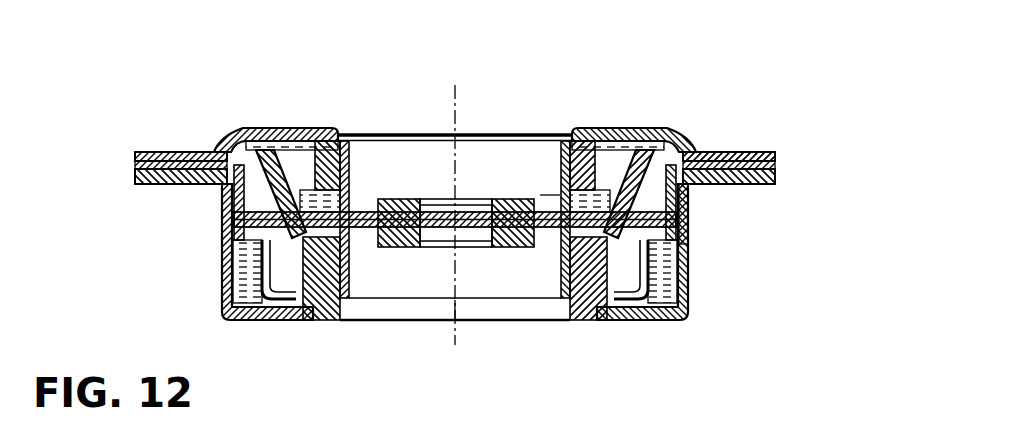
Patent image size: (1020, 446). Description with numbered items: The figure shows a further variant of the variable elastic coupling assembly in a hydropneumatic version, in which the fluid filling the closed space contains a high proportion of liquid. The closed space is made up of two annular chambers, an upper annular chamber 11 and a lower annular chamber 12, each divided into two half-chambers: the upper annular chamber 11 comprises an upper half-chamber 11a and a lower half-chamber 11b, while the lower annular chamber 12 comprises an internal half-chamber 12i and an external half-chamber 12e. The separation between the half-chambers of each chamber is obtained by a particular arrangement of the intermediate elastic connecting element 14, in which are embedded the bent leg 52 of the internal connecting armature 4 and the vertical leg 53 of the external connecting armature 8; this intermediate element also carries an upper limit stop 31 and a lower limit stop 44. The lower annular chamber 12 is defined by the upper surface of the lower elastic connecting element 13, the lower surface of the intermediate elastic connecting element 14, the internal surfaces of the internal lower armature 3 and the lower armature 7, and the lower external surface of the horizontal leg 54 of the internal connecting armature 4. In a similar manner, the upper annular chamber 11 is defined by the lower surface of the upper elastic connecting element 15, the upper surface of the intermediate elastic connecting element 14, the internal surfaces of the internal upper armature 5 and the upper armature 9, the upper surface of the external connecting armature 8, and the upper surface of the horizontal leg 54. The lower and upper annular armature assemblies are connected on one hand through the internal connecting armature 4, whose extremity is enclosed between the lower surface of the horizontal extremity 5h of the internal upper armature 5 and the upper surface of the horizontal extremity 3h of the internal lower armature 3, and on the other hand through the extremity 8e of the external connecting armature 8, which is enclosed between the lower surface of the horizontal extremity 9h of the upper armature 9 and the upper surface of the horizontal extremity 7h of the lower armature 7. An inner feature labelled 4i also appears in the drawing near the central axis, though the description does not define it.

The upper annular chamber 11 is at (335, 57).
The upper half-chamber 11a is at (248, 128).
The lower half-chamber 11b is at (290, 128).
The upper elastic connecting element 15 is at (322, 132).
The internal upper armature 5 is at (546, 165).
The horizontal extremity of the internal upper armature 5h is at (540, 195).
The intermediate elastic connecting element 14 is at (642, 130).
The upper limit stop 31 is at (660, 133).
The upper armature 9 is at (694, 142).
The horizontal extremity of the upper armature 9h is at (745, 152).
The extremity of the external connecting armature 8e is at (775, 166).
The external connecting armature 8 is at (692, 184).
The horizontal extremity of the lower armature 7h is at (752, 177).
The vertical leg of the external connecting armature 53 is at (690, 225).
The bent leg of the internal connecting armature 52 is at (655, 250).
The lower limit stop 44 is at (662, 288).
The lower armature 7 is at (634, 322).
The internal lower armature 3 is at (552, 290).
The horizontal leg of the internal connecting armature 54 is at (550, 232).
The horizontal extremity of the internal lower armature 3h is at (490, 235).
The inner ring 4i is at (431, 332).
The lower elastic connecting element 13 is at (325, 323).
The lower annular chamber 12 is at (137, 255).
The external half-chamber 12e is at (240, 278).
The internal half-chamber 12i is at (262, 297).
The internal connecting armature 4 is at (240, 200).